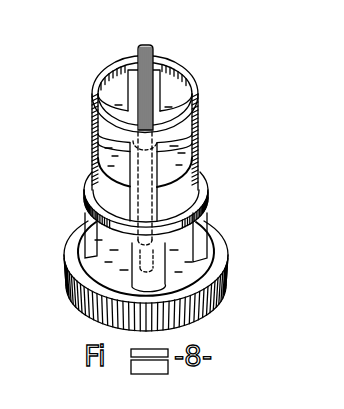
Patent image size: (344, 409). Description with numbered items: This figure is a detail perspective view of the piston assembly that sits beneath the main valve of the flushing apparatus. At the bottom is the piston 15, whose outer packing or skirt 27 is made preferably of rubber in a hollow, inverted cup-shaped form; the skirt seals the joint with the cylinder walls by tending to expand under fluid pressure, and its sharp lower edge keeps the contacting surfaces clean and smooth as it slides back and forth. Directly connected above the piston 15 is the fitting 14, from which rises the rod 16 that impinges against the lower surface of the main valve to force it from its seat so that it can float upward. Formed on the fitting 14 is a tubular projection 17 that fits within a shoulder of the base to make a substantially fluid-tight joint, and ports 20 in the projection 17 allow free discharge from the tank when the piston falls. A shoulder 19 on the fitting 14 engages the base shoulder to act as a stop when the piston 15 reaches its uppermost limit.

The fitting 14 is at (145, 157).
The piston 15 is at (209, 206).
The rod 16 is at (149, 45).
The tubular projection 17 is at (93, 96).
The shoulder 19 is at (89, 169).
The ports 20 is at (178, 91).
The outer packing or skirt 27 is at (223, 293).